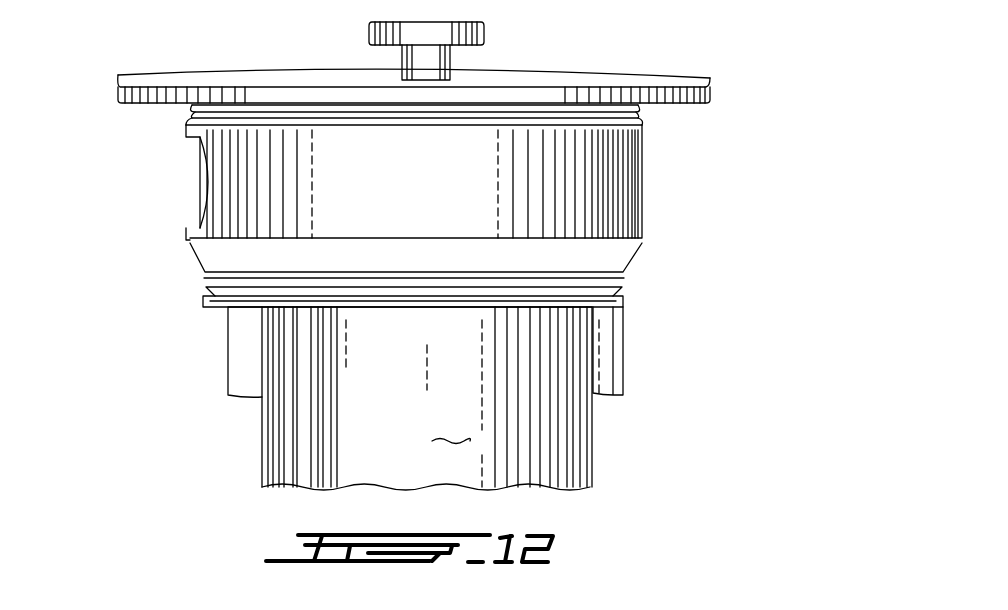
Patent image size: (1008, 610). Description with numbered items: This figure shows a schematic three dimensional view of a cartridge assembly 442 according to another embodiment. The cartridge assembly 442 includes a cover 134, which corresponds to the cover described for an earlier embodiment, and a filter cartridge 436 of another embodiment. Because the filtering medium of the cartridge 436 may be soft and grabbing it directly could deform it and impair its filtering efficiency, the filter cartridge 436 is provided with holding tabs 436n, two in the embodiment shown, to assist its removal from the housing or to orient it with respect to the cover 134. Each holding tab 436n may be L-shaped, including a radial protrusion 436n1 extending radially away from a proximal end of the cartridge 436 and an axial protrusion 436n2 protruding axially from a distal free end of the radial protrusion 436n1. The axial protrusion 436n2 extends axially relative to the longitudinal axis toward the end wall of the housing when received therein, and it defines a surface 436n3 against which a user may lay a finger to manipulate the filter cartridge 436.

The cover 134 is at (193, 184).
The cartridge assembly 442 is at (460, 169).
The filter cartridge 436 is at (426, 398).
The holding tabs 436n is at (412, 395).
The radial protrusion 436n1 is at (622, 300).
The axial protrusion 436n2 is at (675, 351).
The surface 436n3 is at (245, 353).